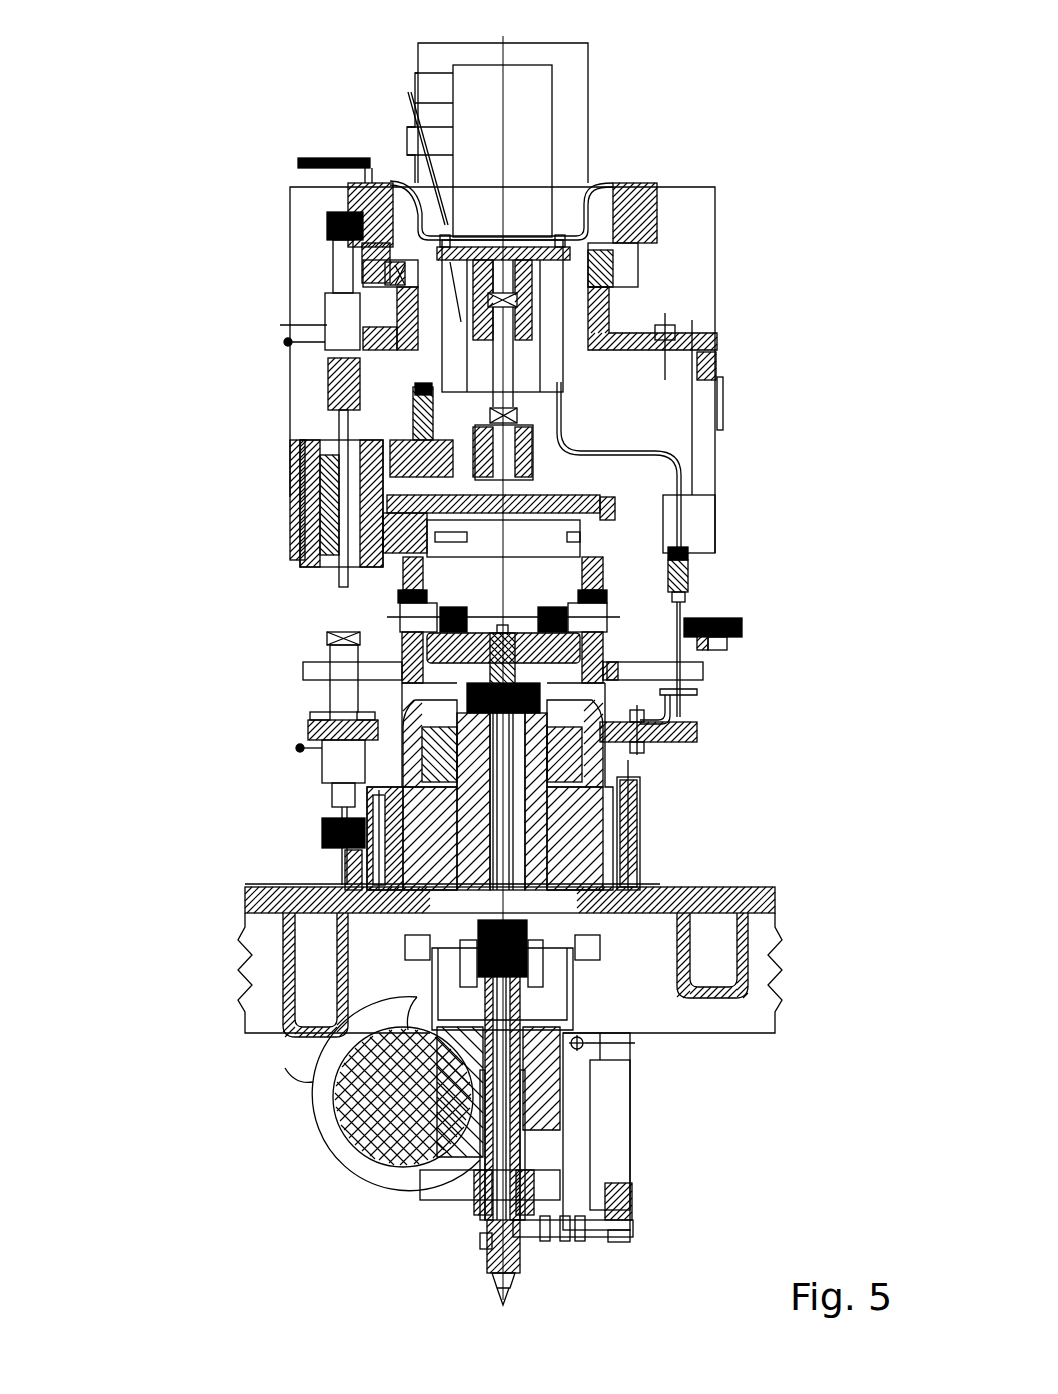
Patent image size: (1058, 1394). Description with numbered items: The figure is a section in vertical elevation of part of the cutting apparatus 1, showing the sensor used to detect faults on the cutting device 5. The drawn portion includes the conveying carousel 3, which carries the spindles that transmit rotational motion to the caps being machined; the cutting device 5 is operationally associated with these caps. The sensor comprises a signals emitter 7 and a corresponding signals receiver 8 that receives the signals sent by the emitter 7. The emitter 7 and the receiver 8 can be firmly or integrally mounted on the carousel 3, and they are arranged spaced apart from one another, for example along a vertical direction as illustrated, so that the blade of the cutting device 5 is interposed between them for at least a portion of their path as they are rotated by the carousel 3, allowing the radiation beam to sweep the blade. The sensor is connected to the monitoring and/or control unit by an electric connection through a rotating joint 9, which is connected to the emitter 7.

The cutting apparatus 1 is at (200, 74).
The conveying carousel 3 is at (190, 692).
The cutting device 5 is at (770, 604).
The signals emitter 7 is at (688, 595).
The signals receiver 8 is at (687, 705).
The rotating joint 9 is at (555, 388).